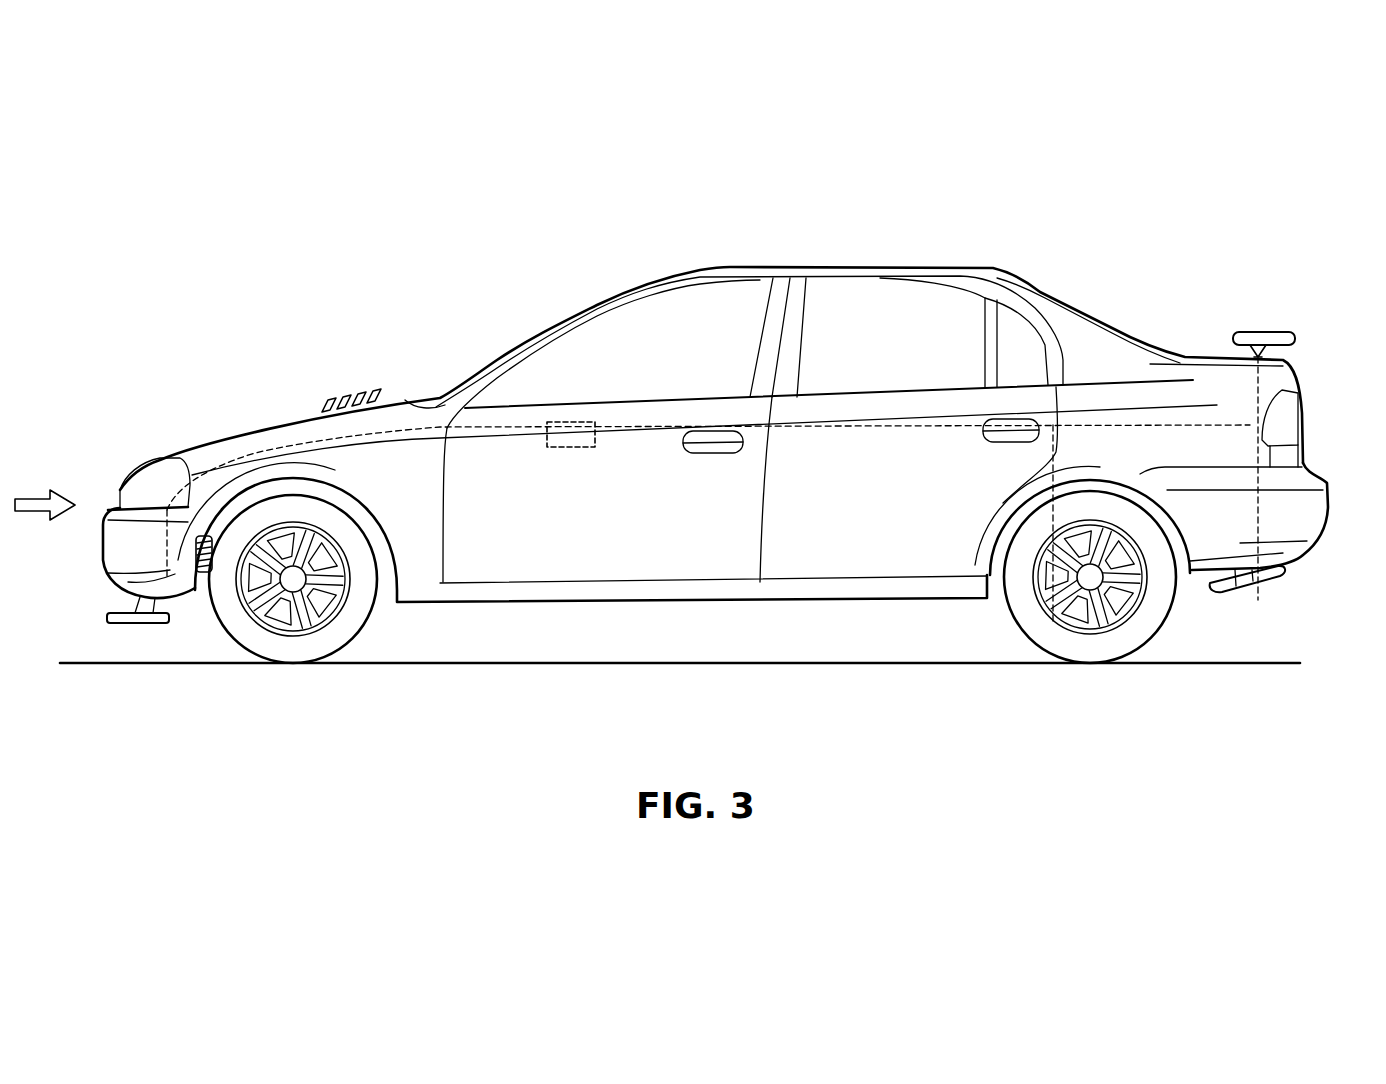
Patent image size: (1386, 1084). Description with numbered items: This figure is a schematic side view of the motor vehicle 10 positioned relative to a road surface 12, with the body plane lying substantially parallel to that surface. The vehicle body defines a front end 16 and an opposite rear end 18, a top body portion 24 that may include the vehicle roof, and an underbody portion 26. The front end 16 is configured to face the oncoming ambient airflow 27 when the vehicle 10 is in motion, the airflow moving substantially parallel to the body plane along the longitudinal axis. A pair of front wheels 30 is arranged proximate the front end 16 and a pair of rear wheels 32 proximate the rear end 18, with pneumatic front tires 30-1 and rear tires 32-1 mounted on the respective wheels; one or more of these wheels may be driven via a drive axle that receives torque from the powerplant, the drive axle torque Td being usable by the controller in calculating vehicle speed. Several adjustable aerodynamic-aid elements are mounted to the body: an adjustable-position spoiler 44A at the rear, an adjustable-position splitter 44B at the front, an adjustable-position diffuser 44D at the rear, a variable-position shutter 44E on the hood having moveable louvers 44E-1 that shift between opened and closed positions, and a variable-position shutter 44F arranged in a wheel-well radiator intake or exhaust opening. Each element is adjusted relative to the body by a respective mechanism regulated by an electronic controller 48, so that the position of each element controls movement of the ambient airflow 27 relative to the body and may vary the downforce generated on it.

The motor vehicle 10 is at (1106, 318).
The road surface 12 is at (540, 667).
The front end 16 is at (114, 488).
The rear end 18 is at (1321, 472).
The top body portion 24 is at (856, 266).
The underbody portion 26 is at (730, 604).
The oncoming ambient airflow 27 is at (38, 492).
The front wheels 30 is at (248, 612).
The front tires 30-1 is at (360, 606).
The rear wheels 32 is at (1170, 561).
The rear tires 32-1 is at (1035, 618).
The adjustable-position spoiler 44A is at (1281, 328).
The adjustable-position splitter 44B is at (106, 620).
The adjustable-position diffuser 44D is at (1290, 583).
The variable-position shutter 44E is at (392, 386).
The moveable louvers 44E-1 is at (325, 405).
The variable-position shutter 44F is at (205, 580).
The electronic controller 48 is at (560, 422).
The drive axle torque Td is at (1097, 582).